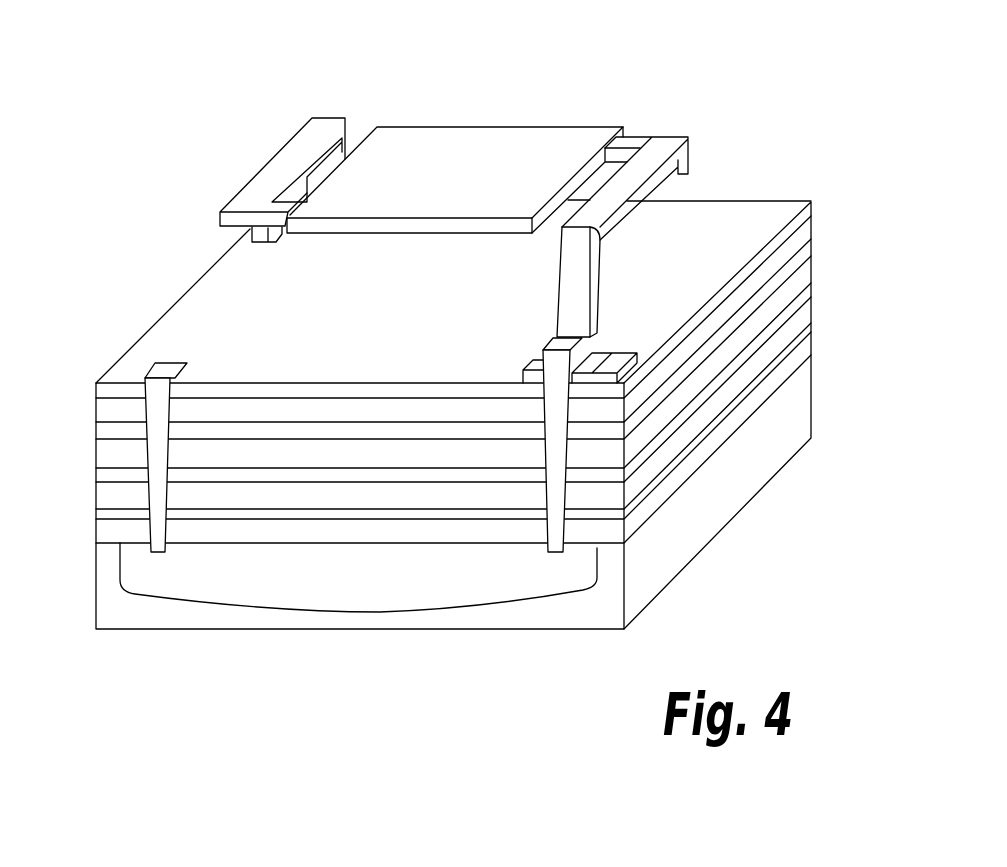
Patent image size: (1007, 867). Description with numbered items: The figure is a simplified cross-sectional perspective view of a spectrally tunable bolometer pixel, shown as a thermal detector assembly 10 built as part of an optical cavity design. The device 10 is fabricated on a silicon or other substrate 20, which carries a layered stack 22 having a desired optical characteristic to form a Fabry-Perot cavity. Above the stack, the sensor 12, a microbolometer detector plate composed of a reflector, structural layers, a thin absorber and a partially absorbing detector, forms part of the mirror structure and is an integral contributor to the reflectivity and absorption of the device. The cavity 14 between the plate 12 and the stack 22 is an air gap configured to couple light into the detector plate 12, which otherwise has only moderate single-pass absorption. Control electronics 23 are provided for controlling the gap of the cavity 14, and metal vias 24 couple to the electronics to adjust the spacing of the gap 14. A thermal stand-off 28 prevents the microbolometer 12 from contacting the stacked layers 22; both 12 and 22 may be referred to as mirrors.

The thermal detector assembly 10 is at (737, 115).
The sensor 12 is at (412, 157).
The cavity 14 is at (203, 323).
The substrate 20 is at (763, 462).
The layered stack 22 is at (811, 262).
The control electronics 23 is at (465, 603).
The metal vias 24 is at (157, 487).
The thermal stand-off 28 is at (265, 242).